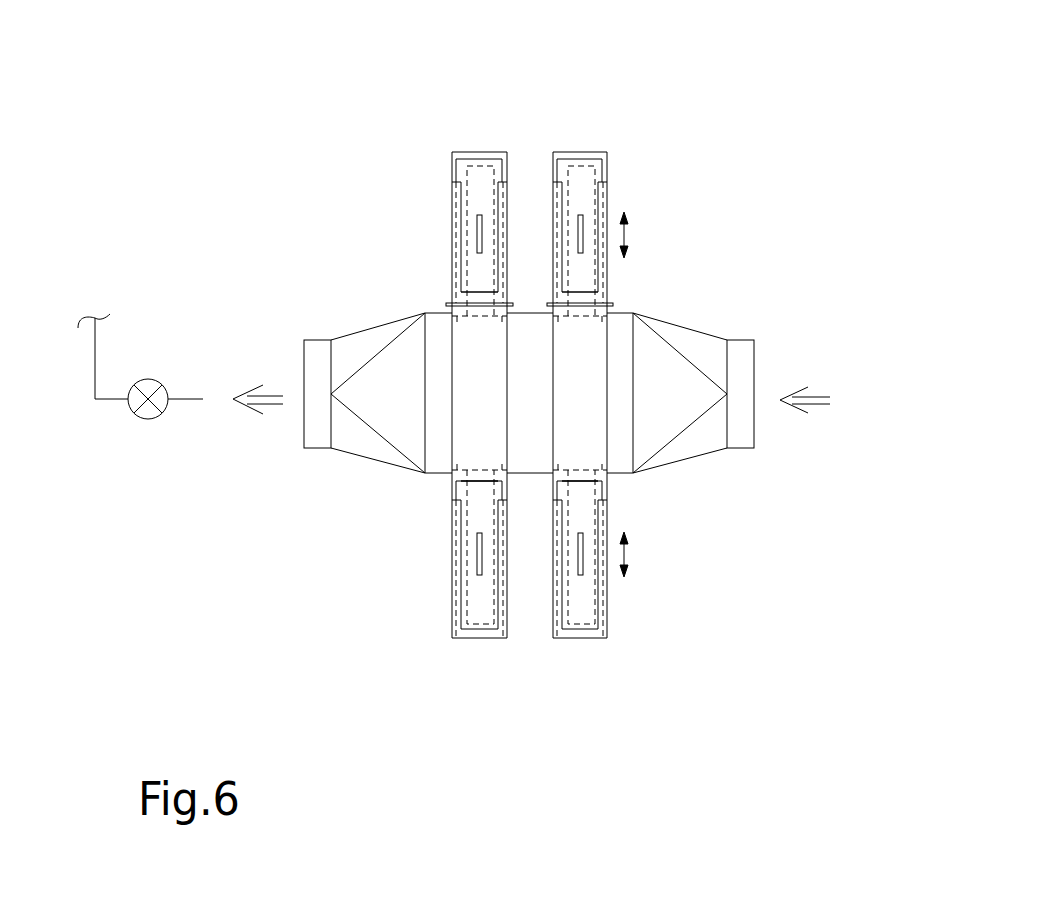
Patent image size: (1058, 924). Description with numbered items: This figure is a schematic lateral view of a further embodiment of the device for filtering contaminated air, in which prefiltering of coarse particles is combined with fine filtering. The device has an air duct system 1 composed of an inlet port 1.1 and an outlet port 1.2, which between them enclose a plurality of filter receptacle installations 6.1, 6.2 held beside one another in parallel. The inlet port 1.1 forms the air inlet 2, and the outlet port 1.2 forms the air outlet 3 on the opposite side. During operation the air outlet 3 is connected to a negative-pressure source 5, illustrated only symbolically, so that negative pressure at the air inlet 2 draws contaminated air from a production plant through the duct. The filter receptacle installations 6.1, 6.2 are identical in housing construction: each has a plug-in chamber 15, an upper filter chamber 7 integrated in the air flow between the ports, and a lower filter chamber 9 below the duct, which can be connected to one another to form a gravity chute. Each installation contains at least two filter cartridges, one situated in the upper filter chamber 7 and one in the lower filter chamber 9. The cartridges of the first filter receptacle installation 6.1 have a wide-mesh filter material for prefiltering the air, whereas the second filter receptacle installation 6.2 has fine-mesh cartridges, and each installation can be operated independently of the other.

The air duct system 1 is at (683, 297).
The inlet port 1.1 is at (703, 450).
The outlet port 1.2 is at (368, 445).
The air inlet 2 is at (757, 355).
The air outlet 3 is at (300, 357).
The negative-pressure source 5 is at (150, 412).
The filter receptacle installation 6.1 is at (478, 137).
The filter receptacle installation 6.2 is at (585, 137).
The upper filter chamber 7 is at (477, 367).
The lower filter chamber 9 is at (453, 617).
The plug-in chamber 15 is at (452, 198).